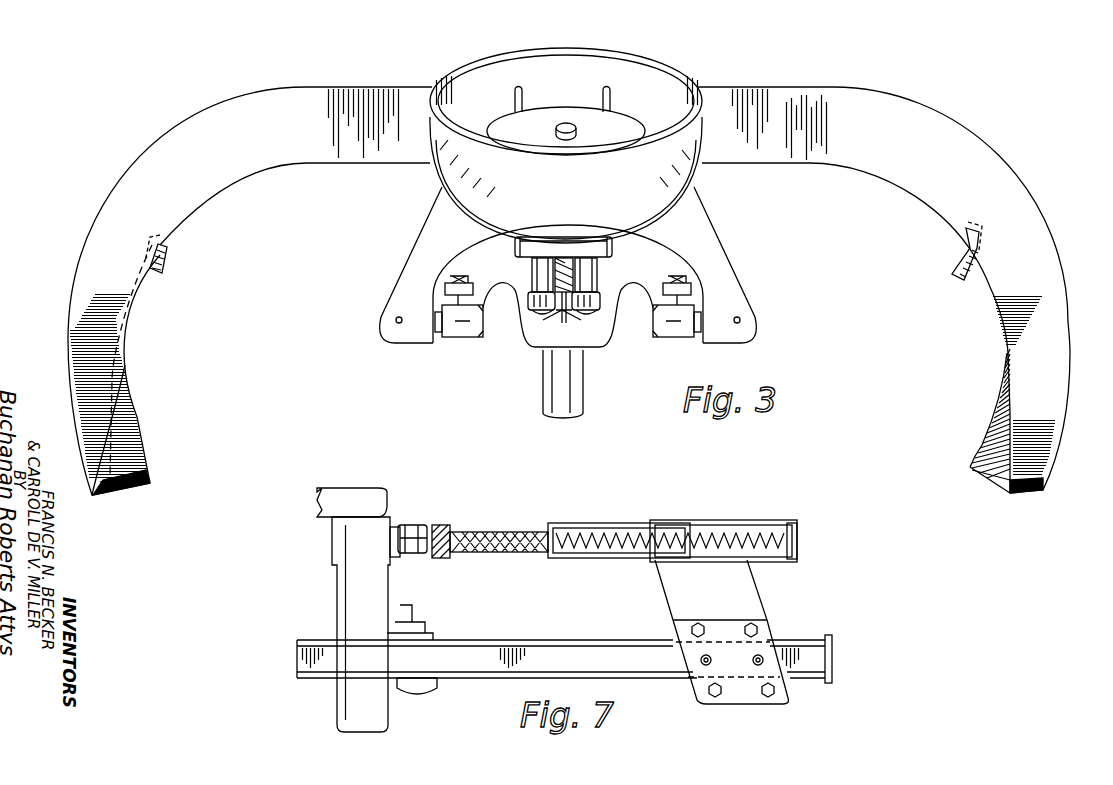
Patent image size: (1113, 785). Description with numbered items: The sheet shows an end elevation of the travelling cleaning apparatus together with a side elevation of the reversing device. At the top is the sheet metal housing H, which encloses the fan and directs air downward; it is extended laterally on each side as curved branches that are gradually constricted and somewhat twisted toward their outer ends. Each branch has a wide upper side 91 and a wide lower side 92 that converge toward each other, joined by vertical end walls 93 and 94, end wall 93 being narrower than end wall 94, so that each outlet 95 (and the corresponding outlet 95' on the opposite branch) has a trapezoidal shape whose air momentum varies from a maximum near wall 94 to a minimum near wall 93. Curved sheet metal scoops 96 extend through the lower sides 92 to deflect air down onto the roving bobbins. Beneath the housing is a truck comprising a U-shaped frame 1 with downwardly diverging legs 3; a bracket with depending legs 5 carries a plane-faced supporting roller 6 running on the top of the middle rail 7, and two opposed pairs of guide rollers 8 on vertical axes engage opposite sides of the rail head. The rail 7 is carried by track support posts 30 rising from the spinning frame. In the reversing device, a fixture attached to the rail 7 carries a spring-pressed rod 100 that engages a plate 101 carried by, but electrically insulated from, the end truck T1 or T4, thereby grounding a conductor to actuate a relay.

In FIG. 3, the sheet metal housing H is at (566, 308).
In FIG. 3, the upper side 91 is at (196, 118).
In FIG. 3, the lower side 92 is at (223, 194).
In FIG. 3, the end wall 93 is at (100, 350).
In FIG. 3, the end wall 94 is at (97, 446).
In FIG. 3, the outlet 95 is at (124, 500).
In FIG. 3, the handle arm end 95' is at (979, 497).
In FIG. 3, the scoop 96 is at (170, 265).
In FIG. 3, the U-shaped frame 1 is at (559, 195).
In FIG. 3, the leg 3 is at (403, 265).
In FIG. 3, the end truck T1 is at (713, 257).
In FIG. 3, the depending leg 5 is at (590, 283).
In FIG. 3, the supporting roller 6 is at (567, 258).
In FIG. 3, the rail 7 is at (553, 317).
In FIG. 7, the rail 7 is at (490, 640).
In FIG. 3, the guide roller 8 is at (533, 297).
In FIG. 3, the track support post 30 is at (560, 413).
In FIG. 7, the end truck T4 is at (335, 708).
In FIG. 7, the spring-pressed rod 100 is at (442, 527).
In FIG. 7, the plate 101 is at (410, 525).